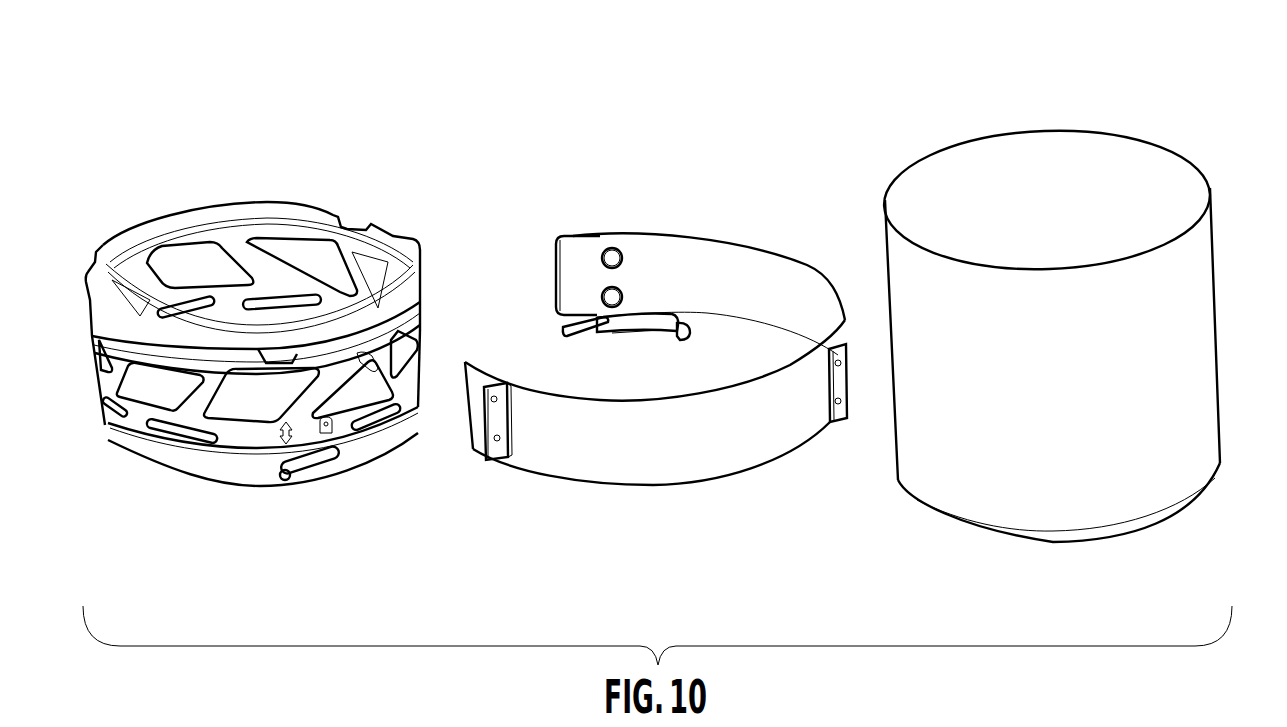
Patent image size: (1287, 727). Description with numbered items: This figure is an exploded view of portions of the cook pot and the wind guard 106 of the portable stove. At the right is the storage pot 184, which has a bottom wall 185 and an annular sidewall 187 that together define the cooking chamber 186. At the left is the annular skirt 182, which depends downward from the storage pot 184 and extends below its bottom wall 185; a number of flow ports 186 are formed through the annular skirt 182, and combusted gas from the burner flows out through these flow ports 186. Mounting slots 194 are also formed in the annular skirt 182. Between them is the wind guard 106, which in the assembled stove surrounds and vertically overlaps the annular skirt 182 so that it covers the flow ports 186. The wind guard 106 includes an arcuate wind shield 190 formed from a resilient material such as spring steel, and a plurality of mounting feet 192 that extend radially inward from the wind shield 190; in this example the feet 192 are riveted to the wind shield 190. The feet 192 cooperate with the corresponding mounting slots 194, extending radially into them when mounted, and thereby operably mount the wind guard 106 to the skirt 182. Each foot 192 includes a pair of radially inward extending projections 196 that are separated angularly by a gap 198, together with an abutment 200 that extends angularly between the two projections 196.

The wind guard 106 is at (664, 133).
The annular skirt 182 is at (150, 452).
The storage pot 184 is at (1206, 304).
The bottom wall 185 is at (1062, 546).
The flow ports 186 is at (213, 268).
The annular sidewall 187 is at (932, 185).
The arcuate wind shield 190 is at (726, 252).
The mounting feet 192 is at (640, 318).
The mounting slots 194 is at (188, 297).
The projections 196 is at (692, 332).
The gap 198 is at (626, 340).
The abutment 200 is at (600, 328).